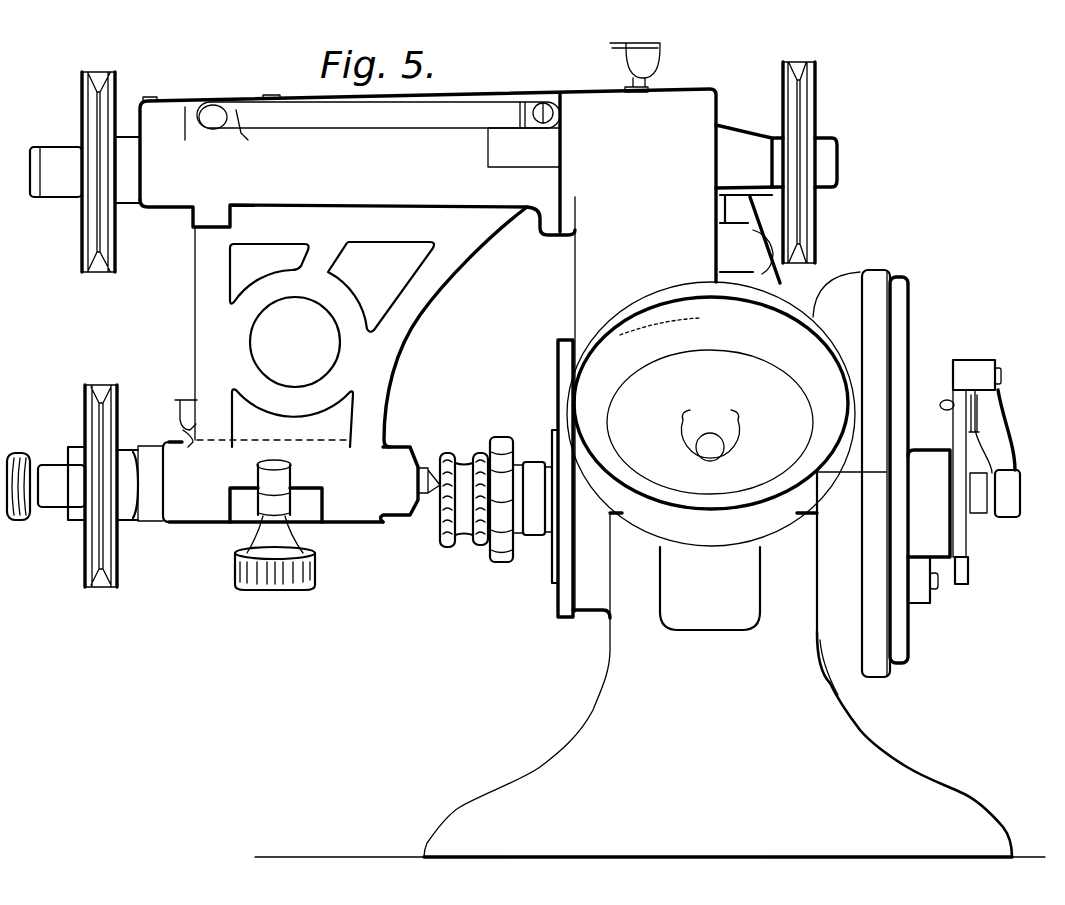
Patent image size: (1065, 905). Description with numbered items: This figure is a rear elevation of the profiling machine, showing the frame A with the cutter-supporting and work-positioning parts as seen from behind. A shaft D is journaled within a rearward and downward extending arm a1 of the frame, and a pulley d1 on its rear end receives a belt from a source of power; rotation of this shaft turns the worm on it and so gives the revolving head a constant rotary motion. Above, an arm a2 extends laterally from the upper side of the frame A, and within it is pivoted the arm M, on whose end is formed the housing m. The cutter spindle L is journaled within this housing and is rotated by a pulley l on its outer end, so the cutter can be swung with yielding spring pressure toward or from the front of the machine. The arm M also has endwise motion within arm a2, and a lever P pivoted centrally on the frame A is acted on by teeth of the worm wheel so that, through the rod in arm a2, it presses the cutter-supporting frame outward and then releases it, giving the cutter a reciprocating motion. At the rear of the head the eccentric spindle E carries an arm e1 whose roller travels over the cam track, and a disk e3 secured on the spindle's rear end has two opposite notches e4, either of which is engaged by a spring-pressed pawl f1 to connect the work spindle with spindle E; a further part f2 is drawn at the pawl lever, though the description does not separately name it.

The arm M is at (200, 290).
The housing m is at (198, 513).
The pulley l is at (62, 486).
The spindle L is at (402, 460).
The arm a1 is at (445, 549).
The arm a2 is at (493, 565).
The lever P is at (773, 285).
The frame A is at (718, 663).
The pulley d1 is at (711, 414).
The shaft D is at (700, 452).
The spindle E is at (918, 457).
The arm e1 is at (933, 580).
The disk e3 is at (966, 535).
The notch e4 is at (972, 558).
The spring-pressed pawl f1 is at (958, 390).
The lever f2 is at (992, 447).